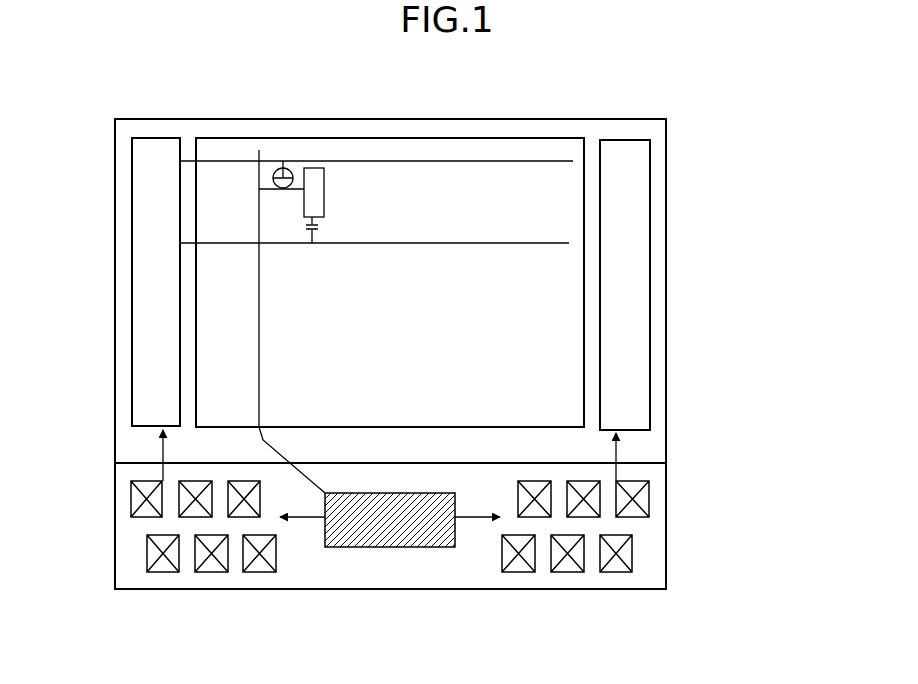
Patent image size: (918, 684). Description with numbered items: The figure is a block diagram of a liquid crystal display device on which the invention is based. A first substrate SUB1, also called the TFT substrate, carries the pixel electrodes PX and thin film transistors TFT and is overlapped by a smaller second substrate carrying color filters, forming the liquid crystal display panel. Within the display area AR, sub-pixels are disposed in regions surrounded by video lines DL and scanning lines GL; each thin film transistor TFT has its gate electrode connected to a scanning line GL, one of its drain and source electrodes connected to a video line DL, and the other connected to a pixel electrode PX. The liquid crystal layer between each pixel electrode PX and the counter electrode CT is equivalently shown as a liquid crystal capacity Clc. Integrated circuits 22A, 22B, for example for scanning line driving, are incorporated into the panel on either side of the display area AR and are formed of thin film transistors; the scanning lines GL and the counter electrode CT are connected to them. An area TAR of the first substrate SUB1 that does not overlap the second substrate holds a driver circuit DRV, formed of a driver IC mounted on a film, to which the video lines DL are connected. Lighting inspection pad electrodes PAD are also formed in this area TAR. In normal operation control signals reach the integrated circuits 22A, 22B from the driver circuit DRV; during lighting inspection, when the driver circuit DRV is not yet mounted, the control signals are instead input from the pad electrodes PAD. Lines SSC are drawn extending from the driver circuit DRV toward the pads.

The integrated circuit 22A is at (130, 215).
The integrated circuit 22B is at (652, 193).
The display area AR is at (545, 136).
The scanning line GL is at (460, 158).
The counter electrode CT is at (447, 240).
The video line DL is at (261, 342).
The thin film transistor TFT is at (290, 166).
The pixel electrode PX is at (327, 195).
The liquid crystal capacity Clc is at (322, 229).
The first substrate SUB1 is at (668, 516).
The driver circuit DRV is at (392, 552).
The source signal connection lines SSC is at (299, 526).
The lighting inspection pad electrode PAD is at (211, 576).
The area TAR is at (98, 477).